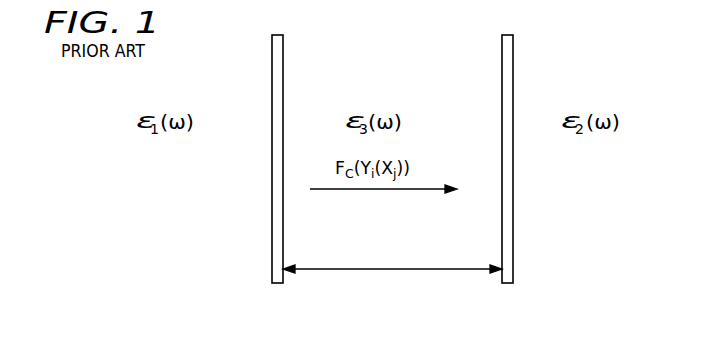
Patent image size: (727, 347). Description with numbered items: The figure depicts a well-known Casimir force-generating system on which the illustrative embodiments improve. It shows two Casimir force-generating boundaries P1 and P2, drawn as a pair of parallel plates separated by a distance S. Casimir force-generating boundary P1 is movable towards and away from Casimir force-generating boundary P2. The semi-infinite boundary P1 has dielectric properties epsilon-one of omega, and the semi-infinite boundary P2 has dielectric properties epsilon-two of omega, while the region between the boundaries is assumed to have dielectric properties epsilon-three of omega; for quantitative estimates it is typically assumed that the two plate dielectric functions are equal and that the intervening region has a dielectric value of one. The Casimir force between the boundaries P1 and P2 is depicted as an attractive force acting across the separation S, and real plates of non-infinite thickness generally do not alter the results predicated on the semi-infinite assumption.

The Casimir force-generating boundary P1 is at (272, 48).
The Casimir force-generating boundary P2 is at (502, 48).
The distance S is at (387, 268).